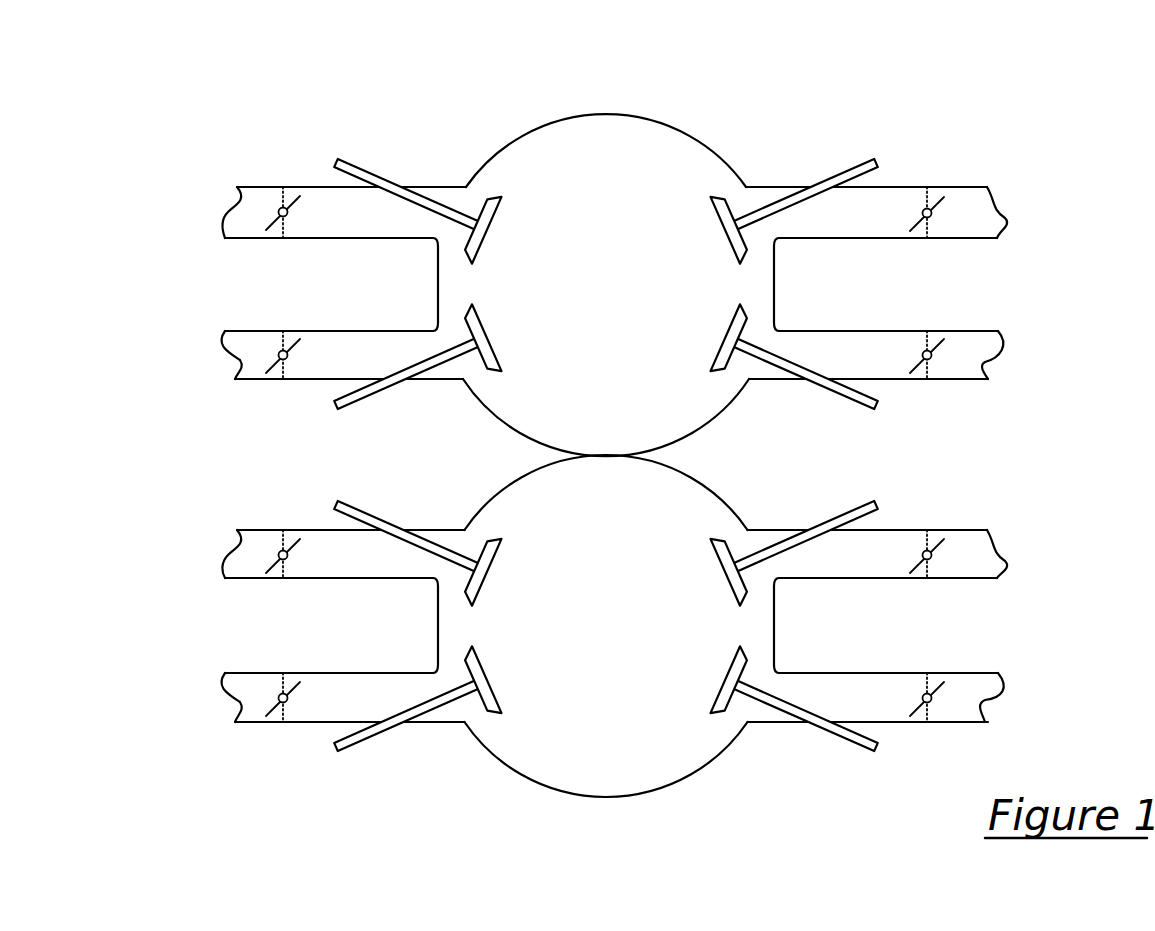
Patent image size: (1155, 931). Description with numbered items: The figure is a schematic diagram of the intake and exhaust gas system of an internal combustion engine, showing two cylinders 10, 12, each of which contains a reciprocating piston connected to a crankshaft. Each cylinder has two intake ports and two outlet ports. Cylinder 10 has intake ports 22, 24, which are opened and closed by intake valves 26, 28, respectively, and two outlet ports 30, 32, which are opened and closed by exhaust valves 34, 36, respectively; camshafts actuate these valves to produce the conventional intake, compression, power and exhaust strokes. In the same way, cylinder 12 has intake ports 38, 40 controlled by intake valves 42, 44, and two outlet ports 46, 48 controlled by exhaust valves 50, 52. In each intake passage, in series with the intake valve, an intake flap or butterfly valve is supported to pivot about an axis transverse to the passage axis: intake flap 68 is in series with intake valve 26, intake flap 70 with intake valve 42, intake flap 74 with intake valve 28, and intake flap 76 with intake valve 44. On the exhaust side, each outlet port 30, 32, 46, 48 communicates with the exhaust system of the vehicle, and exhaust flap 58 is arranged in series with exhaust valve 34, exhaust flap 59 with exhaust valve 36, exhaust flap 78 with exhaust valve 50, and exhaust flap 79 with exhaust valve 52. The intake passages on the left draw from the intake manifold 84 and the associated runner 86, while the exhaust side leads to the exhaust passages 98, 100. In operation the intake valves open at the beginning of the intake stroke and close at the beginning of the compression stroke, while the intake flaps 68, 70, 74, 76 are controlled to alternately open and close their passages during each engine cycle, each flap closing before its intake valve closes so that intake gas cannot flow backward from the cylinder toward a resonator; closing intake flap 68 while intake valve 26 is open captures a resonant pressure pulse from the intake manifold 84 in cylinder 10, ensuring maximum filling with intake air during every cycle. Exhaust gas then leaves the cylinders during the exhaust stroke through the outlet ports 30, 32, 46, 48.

The cylinder 10 is at (607, 113).
The cylinder 12 is at (687, 474).
The intake port 22 is at (465, 185).
The intake port 24 is at (462, 378).
The intake valve 26 is at (353, 162).
The intake valve 28 is at (352, 404).
The outlet port 30 is at (752, 187).
The outlet port 32 is at (745, 380).
The exhaust valve 34 is at (855, 165).
The exhaust valve 36 is at (858, 404).
The intake port 38 is at (458, 530).
The intake port 40 is at (460, 722).
The intake valve 42 is at (368, 516).
The intake valve 44 is at (349, 745).
The outlet port 46 is at (752, 528).
The outlet port 48 is at (747, 726).
The exhaust valve 50 is at (834, 510).
The exhaust valve 52 is at (857, 746).
The exhaust flap 58 is at (942, 204).
The exhaust flap 59 is at (940, 340).
The intake flap 68 is at (298, 196).
The intake flap 70 is at (296, 537).
The intake flap 74 is at (297, 340).
The intake flap 76 is at (300, 690).
The exhaust flap 78 is at (942, 540).
The exhaust flap 79 is at (935, 685).
The intake manifold 84 is at (262, 186).
The intake manifold runner 86 is at (433, 528).
The exhaust manifold runner 98 is at (256, 331).
The exhaust manifold runner 100 is at (295, 722).